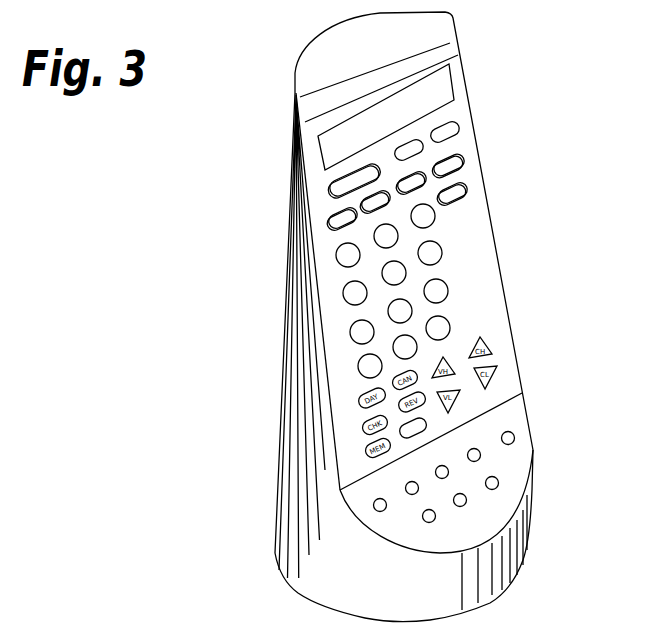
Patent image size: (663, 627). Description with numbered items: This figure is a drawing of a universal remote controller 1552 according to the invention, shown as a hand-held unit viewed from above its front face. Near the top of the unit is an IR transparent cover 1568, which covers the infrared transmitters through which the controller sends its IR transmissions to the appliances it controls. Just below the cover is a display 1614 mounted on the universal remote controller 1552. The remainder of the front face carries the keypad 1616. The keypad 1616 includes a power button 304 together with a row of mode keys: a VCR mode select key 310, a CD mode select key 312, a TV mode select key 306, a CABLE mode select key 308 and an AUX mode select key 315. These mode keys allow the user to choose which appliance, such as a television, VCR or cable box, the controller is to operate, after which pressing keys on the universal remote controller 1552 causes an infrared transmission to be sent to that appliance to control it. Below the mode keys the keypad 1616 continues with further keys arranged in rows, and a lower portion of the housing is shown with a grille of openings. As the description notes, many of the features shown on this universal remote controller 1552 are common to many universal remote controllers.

The universal remote controller 1552 is at (465, 57).
The IR transparent cover 1568 is at (335, 40).
The display 1614 is at (433, 88).
The power button 304 is at (333, 188).
The TV mode select key 306 is at (428, 183).
The CABLE mode select key 308 is at (464, 165).
The VCR mode select key 310 is at (329, 221).
The CD mode select key 312 is at (361, 201).
The AUX mode select key 315 is at (468, 193).
The keypad 1616 is at (338, 266).